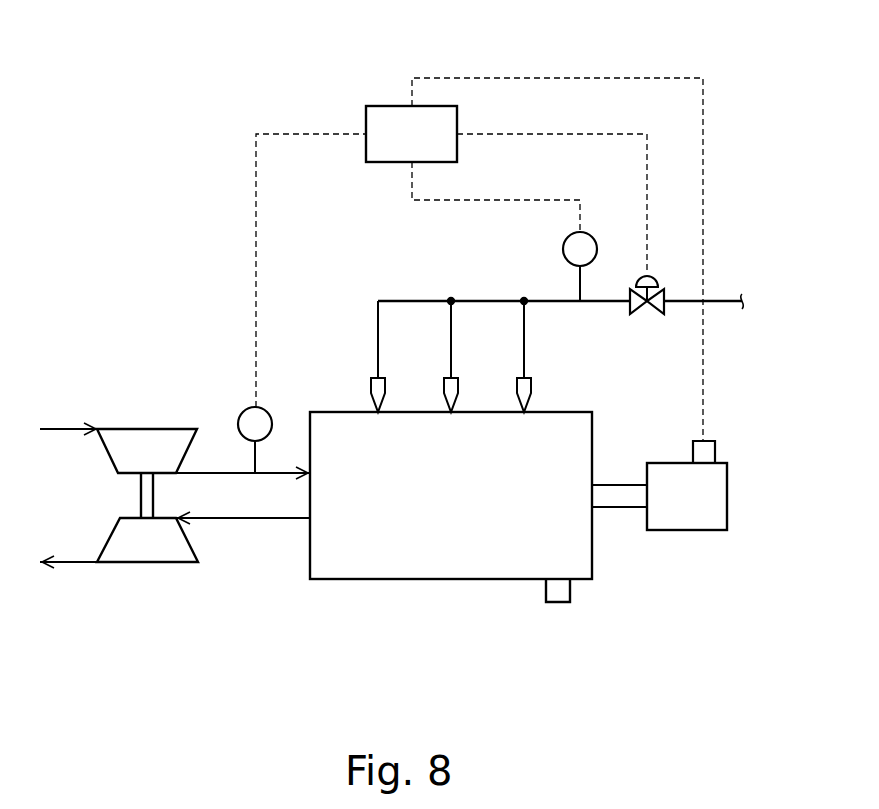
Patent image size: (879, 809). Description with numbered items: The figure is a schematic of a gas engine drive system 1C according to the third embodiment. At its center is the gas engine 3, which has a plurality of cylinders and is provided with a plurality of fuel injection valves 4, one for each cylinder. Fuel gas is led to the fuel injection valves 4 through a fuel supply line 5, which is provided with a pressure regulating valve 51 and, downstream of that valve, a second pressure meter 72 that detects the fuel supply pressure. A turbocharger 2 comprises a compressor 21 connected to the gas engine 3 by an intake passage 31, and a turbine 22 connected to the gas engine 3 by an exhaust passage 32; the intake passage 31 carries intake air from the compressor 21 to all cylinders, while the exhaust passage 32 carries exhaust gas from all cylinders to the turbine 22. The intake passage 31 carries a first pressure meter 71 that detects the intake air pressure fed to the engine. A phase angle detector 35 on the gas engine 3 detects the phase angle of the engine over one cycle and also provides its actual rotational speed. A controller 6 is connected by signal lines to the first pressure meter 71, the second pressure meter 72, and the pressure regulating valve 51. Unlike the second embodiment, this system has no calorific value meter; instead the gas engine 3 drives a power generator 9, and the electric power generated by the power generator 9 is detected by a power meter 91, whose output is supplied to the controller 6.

The gas engine drive system 1C is at (132, 157).
The turbocharger 2 is at (118, 567).
The compressor 21 is at (143, 438).
The turbine 22 is at (155, 555).
The gas engine 3 is at (437, 550).
The intake passage 31 is at (216, 470).
The exhaust passage 32 is at (258, 522).
The phase angle detector 35 is at (557, 597).
The fuel injection valves 4 is at (370, 392).
The fuel supply line 5 is at (680, 306).
The pressure regulating valve 51 is at (652, 273).
The controller 6 is at (386, 112).
The first pressure meter 71 is at (252, 408).
The second pressure meter 72 is at (562, 244).
The power generator 9 is at (683, 518).
The power meter 91 is at (707, 453).